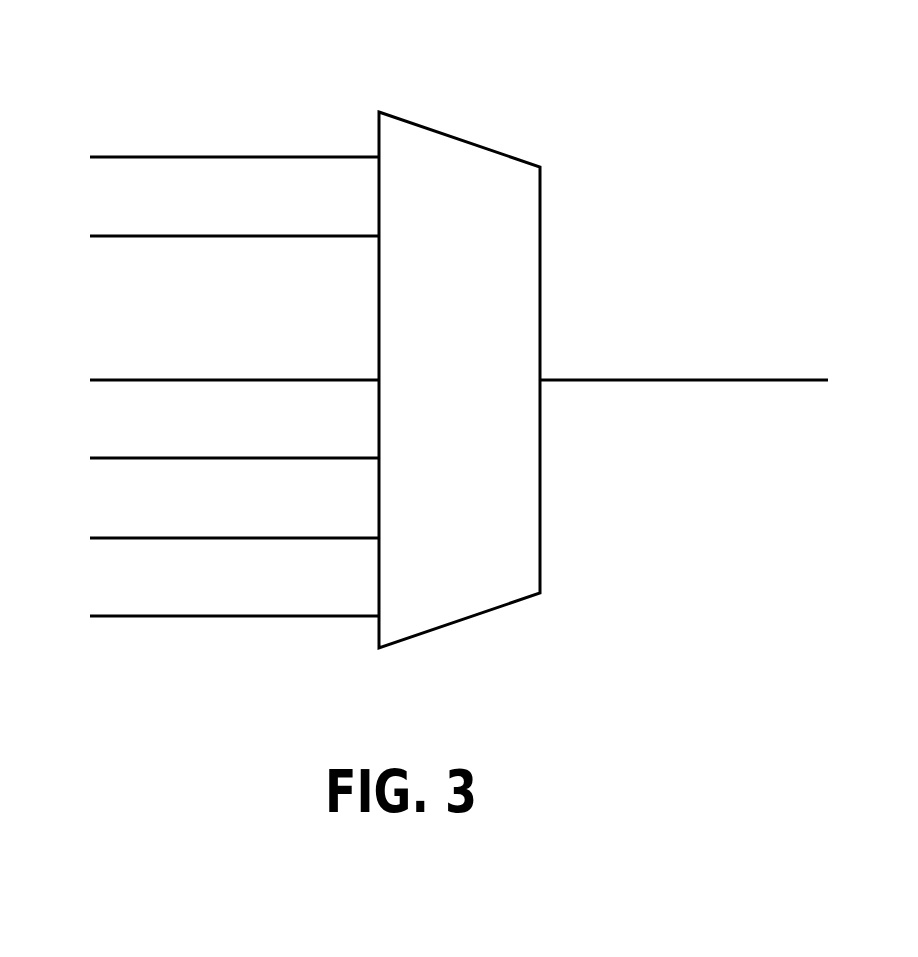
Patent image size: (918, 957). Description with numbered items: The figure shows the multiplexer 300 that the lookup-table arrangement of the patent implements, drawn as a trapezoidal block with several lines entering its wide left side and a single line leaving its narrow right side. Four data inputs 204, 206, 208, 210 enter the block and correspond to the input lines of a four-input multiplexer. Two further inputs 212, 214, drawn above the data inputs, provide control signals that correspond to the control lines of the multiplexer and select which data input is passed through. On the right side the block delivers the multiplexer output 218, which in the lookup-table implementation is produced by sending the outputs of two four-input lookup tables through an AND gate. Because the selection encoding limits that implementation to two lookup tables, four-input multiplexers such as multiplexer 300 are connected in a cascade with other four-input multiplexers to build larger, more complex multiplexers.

The multiplexer 300 is at (423, 123).
The input 212 is at (130, 156).
The input 214 is at (130, 235).
The input 204 is at (130, 379).
The input 206 is at (130, 457).
The input 208 is at (128, 537).
The input 210 is at (127, 615).
The multiplexer output 218 is at (743, 380).